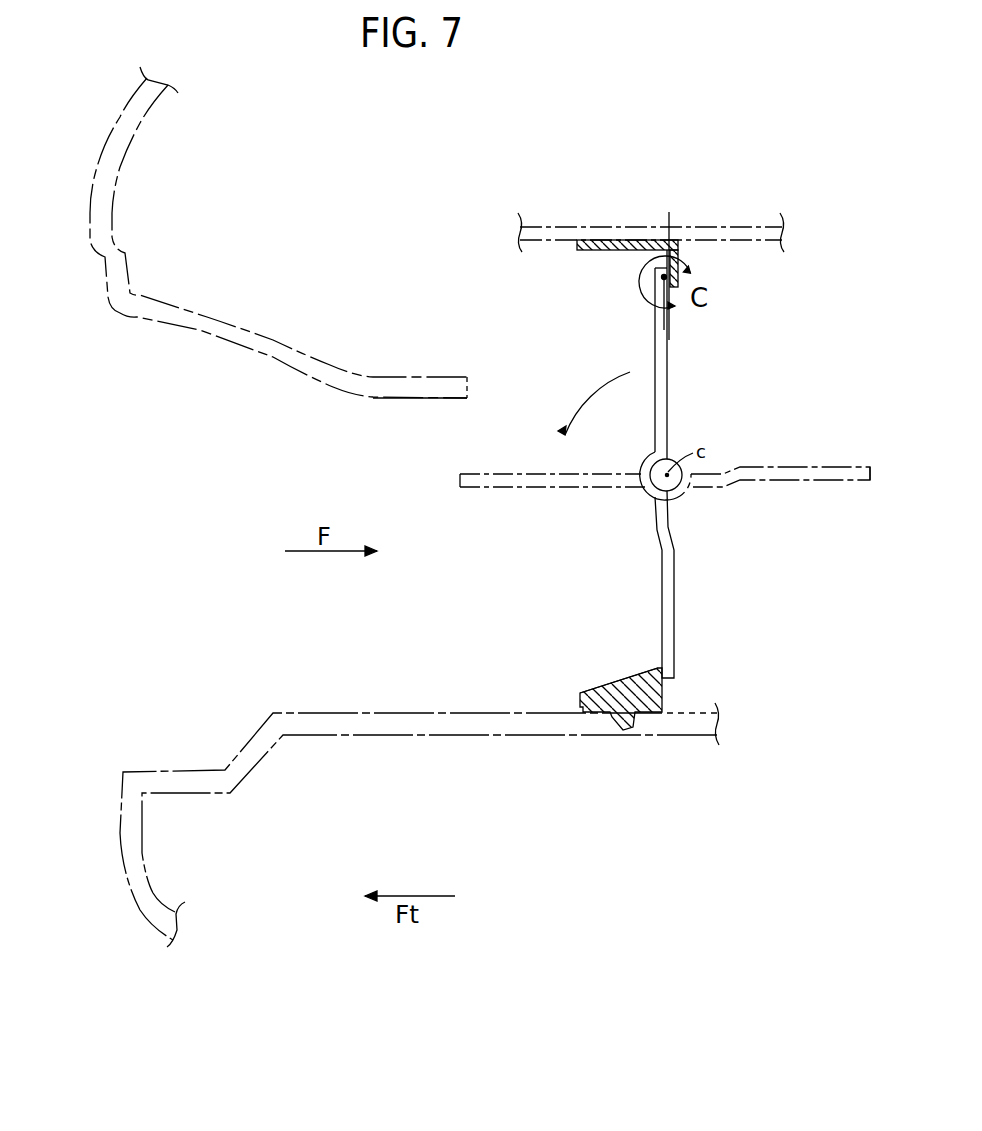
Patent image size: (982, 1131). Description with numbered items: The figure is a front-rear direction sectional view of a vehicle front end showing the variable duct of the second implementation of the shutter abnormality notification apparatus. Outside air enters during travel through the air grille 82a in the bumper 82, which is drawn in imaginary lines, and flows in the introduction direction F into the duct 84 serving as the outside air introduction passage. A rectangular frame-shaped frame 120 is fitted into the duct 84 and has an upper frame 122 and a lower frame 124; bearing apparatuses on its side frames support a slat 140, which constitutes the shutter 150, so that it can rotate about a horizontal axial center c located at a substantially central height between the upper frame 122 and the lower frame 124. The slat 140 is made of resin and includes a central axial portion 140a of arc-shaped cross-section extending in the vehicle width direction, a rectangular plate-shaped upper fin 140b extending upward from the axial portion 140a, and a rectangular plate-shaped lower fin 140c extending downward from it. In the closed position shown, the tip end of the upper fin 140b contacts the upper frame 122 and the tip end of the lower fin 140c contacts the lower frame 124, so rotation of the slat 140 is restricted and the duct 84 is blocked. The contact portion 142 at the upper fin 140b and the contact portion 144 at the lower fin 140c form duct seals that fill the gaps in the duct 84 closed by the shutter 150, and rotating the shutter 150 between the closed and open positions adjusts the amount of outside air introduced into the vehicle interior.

The bumper 82 is at (137, 103).
The air grille 82a is at (373, 437).
The duct 84 is at (728, 250).
The frame 120 is at (651, 485).
The upper frame 122 is at (617, 252).
The lower frame 124 is at (663, 693).
The slat 140 is at (674, 445).
The axial portion 140a is at (643, 495).
The upper fin 140b is at (670, 375).
The lower fin 140c is at (677, 592).
The contact portion 142 is at (667, 290).
The contact portion 144 is at (658, 667).
The shutter 150 is at (578, 393).